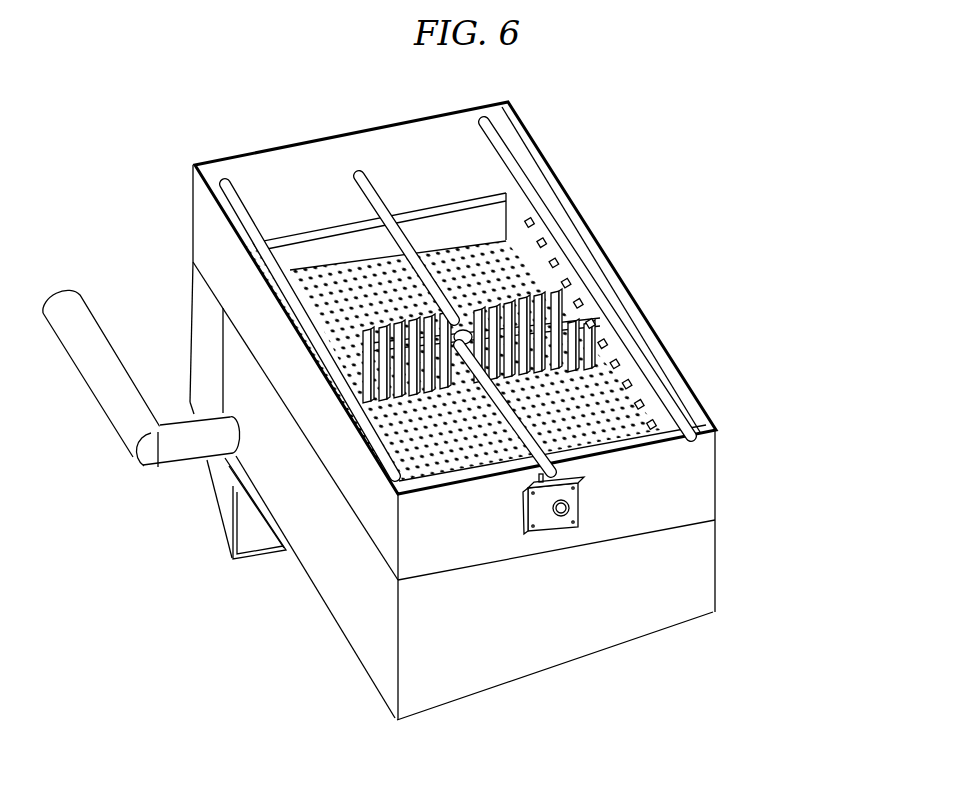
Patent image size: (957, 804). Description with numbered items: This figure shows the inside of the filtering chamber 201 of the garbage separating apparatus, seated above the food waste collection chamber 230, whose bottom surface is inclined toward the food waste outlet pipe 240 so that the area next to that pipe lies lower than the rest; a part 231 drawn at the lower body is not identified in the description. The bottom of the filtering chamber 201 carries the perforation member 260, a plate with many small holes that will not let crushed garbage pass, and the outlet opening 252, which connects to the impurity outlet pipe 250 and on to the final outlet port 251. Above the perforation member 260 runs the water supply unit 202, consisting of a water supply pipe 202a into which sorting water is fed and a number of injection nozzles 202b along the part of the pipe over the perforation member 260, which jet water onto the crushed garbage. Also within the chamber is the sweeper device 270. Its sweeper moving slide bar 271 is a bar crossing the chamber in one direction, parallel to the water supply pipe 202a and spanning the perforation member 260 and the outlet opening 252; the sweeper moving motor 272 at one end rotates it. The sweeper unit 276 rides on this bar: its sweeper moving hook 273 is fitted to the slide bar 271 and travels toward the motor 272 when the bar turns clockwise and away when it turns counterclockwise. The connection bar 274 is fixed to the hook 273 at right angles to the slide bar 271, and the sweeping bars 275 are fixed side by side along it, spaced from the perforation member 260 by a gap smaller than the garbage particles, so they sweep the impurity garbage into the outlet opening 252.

The filtering chamber 201 is at (735, 462).
The water supply unit 202 is at (613, 268).
The water supply pipe 202a is at (500, 150).
The injection nozzles 202b is at (530, 224).
The food waste collection chamber 230 is at (528, 607).
The bottom plate 231 is at (483, 690).
The food waste outlet pipe 240 is at (87, 333).
The impurity outlet pipe 250 is at (200, 306).
The final outlet port 251 is at (245, 532).
The outlet opening 252 is at (420, 208).
The perforation member 260 is at (353, 298).
The sweeper device 270 is at (621, 366).
The sweeper moving slide bar 271 is at (460, 264).
The sweeper moving motor 272 is at (562, 484).
The sweeper moving hook 273 is at (456, 338).
The connection bar 274 is at (488, 298).
The sweeping bars 275 is at (472, 328).
The sweeper unit 276 is at (588, 314).